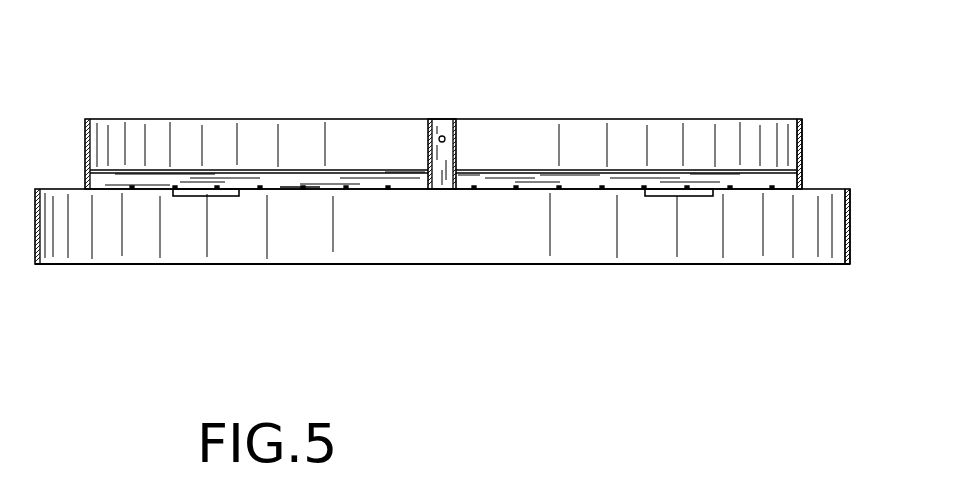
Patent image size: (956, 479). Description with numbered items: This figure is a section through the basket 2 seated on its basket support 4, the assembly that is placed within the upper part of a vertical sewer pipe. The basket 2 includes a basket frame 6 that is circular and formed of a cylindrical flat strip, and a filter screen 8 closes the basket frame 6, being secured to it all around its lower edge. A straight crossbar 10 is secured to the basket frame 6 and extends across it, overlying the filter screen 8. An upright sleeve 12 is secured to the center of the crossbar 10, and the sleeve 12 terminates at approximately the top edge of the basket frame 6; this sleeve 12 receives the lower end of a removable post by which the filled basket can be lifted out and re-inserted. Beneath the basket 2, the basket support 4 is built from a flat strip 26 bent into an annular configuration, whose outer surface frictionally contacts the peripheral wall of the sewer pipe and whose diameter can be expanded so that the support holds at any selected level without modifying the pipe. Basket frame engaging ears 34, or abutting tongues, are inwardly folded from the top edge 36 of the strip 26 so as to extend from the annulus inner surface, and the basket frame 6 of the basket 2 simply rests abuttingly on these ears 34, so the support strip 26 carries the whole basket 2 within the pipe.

The basket 2 is at (218, 107).
The basket support 4 is at (399, 277).
The basket frame 6 is at (802, 143).
The filter screen 8 is at (300, 190).
The crossbar 10 is at (535, 168).
The upright sleeve 12 is at (457, 148).
The flat strip 26 is at (850, 232).
The basket frame engaging ears 34 is at (662, 198).
The top edge 36 is at (708, 198).